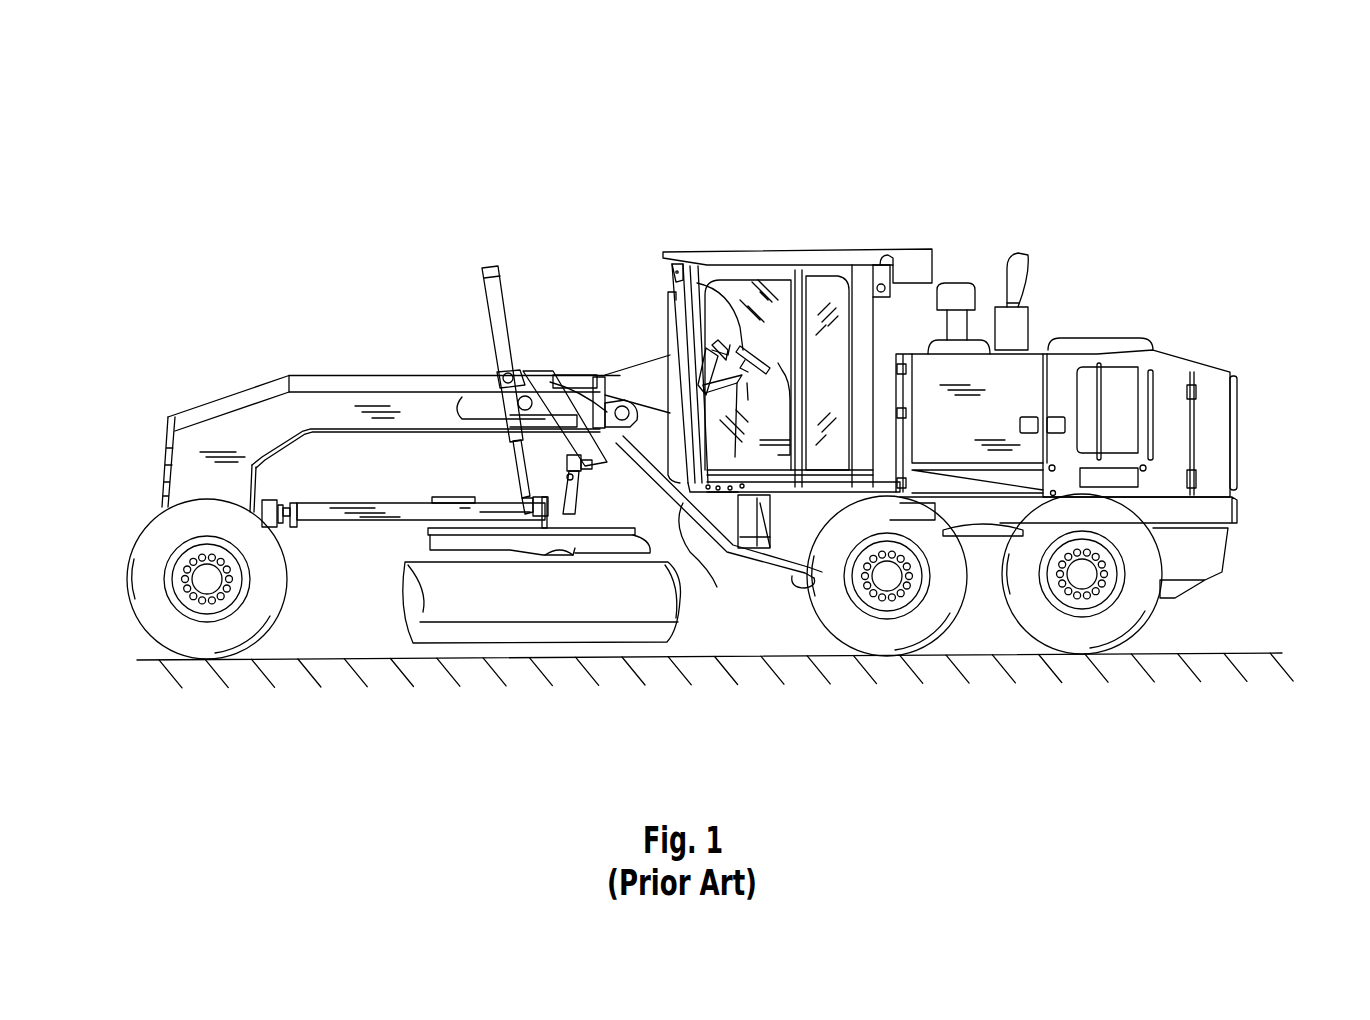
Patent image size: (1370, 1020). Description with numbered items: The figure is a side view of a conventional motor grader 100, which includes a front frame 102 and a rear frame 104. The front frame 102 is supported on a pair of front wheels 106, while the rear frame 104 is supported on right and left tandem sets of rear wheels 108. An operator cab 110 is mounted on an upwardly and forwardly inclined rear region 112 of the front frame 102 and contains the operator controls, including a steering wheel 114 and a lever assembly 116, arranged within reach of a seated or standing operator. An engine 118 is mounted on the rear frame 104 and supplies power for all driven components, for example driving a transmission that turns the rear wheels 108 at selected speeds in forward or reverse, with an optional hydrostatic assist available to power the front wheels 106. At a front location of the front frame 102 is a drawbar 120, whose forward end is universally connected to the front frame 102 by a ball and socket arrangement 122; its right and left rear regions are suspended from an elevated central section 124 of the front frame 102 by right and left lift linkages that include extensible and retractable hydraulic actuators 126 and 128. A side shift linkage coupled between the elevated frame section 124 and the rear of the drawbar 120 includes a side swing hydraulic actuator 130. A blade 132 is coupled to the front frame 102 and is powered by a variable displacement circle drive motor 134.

The motor grader 100 is at (1070, 158).
The front frame 102 is at (248, 378).
The rear frame 104 is at (1202, 596).
The front wheels 106 is at (194, 645).
The rear wheels 108 is at (870, 636).
The operator cab 110 is at (838, 246).
The rear region of the front frame 112 is at (692, 542).
The steering wheel 114 is at (742, 340).
The lever assembly 116 is at (706, 350).
The engine 118 is at (1056, 383).
The drawbar 120 is at (382, 513).
The ball and socket arrangement 122 is at (278, 522).
The elevated central section of the front frame 124 is at (340, 380).
The right lift hydraulic actuator 126 is at (492, 330).
The left lift hydraulic actuator 128 is at (485, 290).
The side swing hydraulic actuator 130 is at (572, 492).
The blade 132 is at (405, 625).
The variable displacement circle drive motor 134 is at (456, 497).